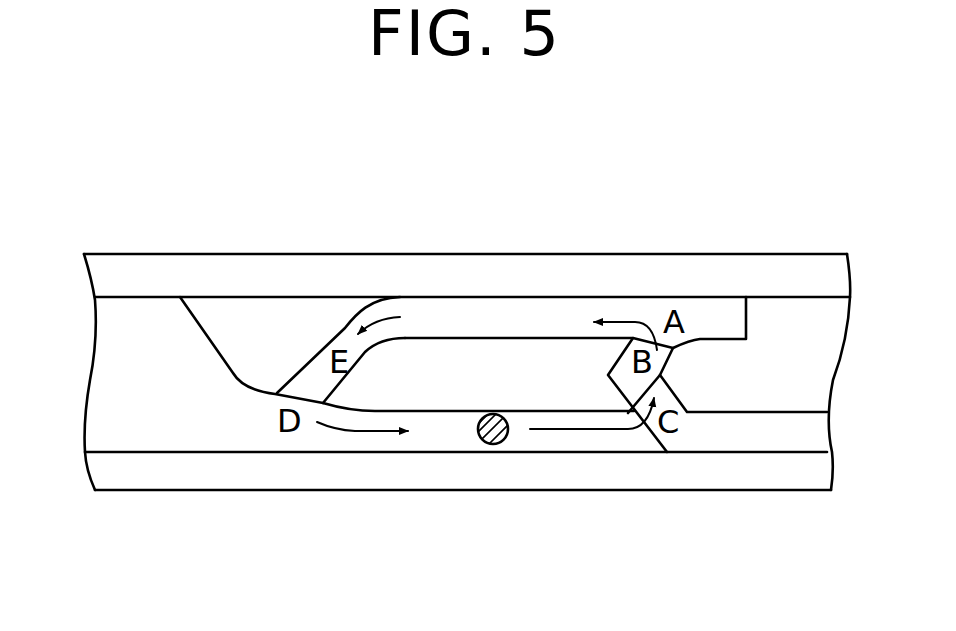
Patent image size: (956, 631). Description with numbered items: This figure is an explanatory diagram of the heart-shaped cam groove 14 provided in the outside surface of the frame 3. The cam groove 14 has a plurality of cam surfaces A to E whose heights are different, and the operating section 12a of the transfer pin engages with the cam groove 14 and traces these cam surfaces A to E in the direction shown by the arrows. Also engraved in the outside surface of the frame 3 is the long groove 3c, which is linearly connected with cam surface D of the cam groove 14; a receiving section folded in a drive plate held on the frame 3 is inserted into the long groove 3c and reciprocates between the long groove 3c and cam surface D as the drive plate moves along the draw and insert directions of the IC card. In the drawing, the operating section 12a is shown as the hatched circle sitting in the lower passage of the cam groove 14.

The frame 3 is at (348, 253).
The heart-shaped cam groove 14 is at (522, 317).
The operating section 12a is at (486, 445).
The long groove 3c is at (743, 436).